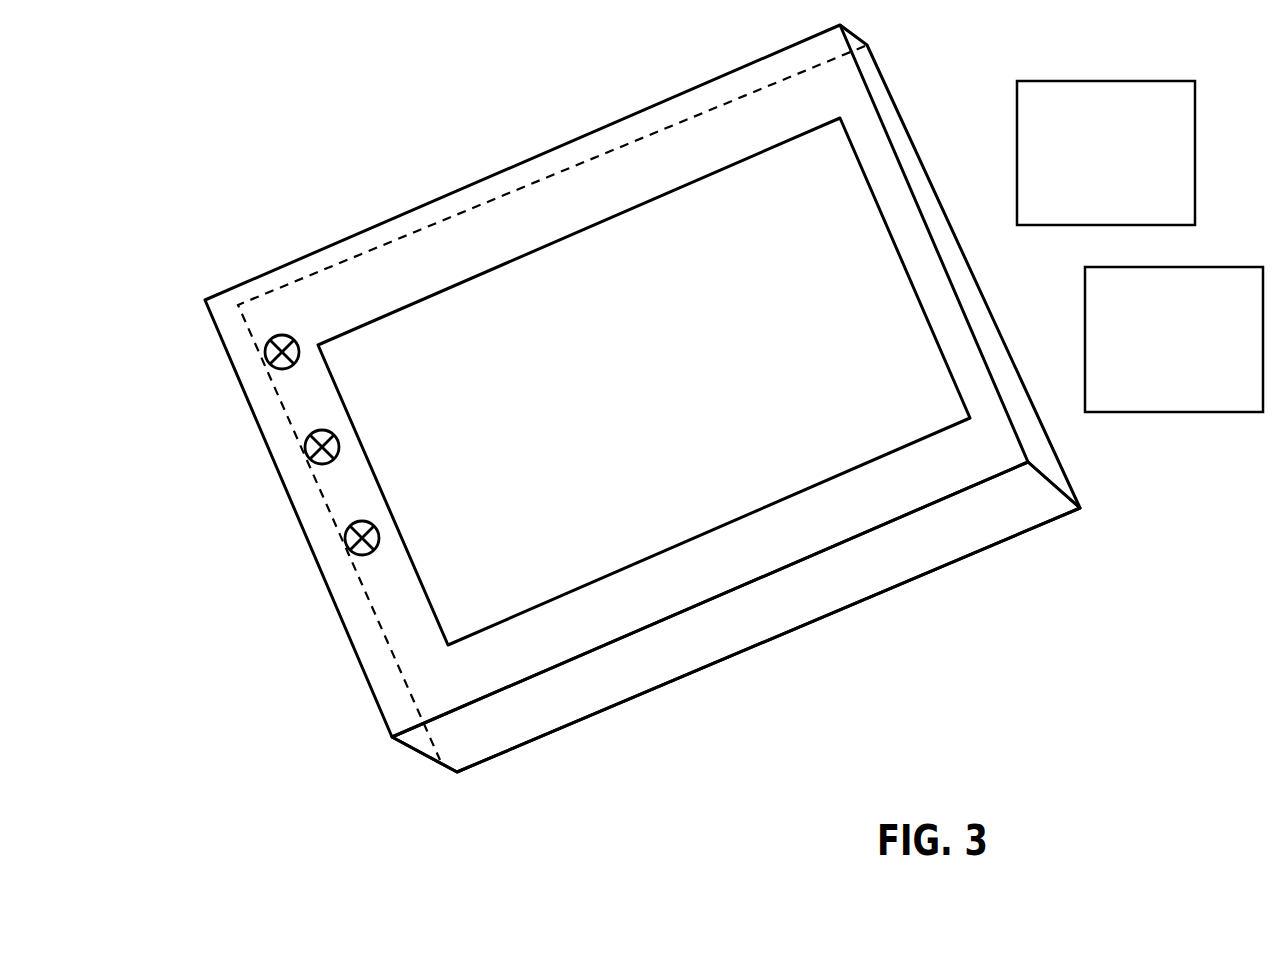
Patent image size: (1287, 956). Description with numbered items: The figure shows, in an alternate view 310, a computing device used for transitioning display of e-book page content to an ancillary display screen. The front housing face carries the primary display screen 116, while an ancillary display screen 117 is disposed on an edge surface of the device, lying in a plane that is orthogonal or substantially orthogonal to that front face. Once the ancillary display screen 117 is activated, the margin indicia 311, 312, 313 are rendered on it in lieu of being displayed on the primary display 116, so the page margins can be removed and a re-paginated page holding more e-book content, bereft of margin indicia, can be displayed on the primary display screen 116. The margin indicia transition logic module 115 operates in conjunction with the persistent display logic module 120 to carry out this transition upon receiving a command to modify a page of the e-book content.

The view 310 is at (252, 113).
The margin indicia transition logic module 115 is at (880, 75).
The persistent display logic 120 is at (967, 270).
The primary display screen 116 is at (502, 545).
The ancillary display screen 117 is at (967, 517).
The margin indicia 311 is at (875, 568).
The margin indicia 312 is at (707, 643).
The margin indicia 313 is at (537, 722).